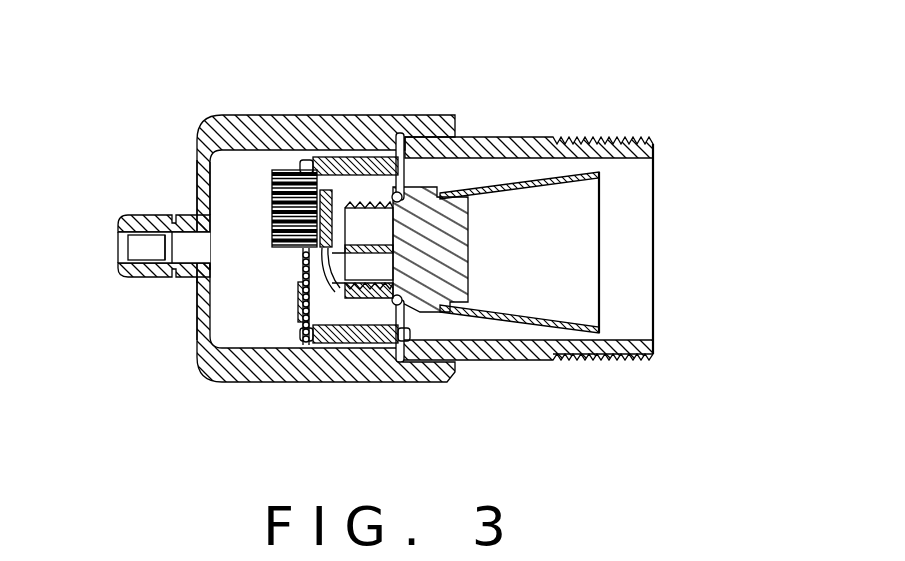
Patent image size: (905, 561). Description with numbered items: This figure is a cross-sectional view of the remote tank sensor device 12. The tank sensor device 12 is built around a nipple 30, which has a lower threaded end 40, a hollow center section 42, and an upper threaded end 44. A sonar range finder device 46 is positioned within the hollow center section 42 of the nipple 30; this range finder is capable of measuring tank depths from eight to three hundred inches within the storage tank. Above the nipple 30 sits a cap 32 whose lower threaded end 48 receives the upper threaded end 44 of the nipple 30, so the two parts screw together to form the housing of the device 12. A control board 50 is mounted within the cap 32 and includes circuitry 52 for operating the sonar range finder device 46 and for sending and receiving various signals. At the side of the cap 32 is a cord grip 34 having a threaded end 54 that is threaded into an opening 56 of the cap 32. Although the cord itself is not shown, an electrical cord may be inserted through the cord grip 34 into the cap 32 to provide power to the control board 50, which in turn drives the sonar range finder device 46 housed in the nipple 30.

The remote tank sensor device 12 is at (628, 110).
The nipple 30 is at (596, 366).
The cap 32 is at (325, 386).
The cord grip 34 is at (135, 287).
The lower threaded end 40 is at (656, 147).
The hollow center section 42 is at (640, 226).
The upper threaded end 44 is at (404, 133).
The sonar range finder device 46 is at (470, 263).
The lower threaded end 48 is at (416, 362).
The control board 50 is at (264, 301).
The circuitry 52 is at (283, 172).
The threaded end 54 is at (200, 197).
The opening 56 is at (198, 283).